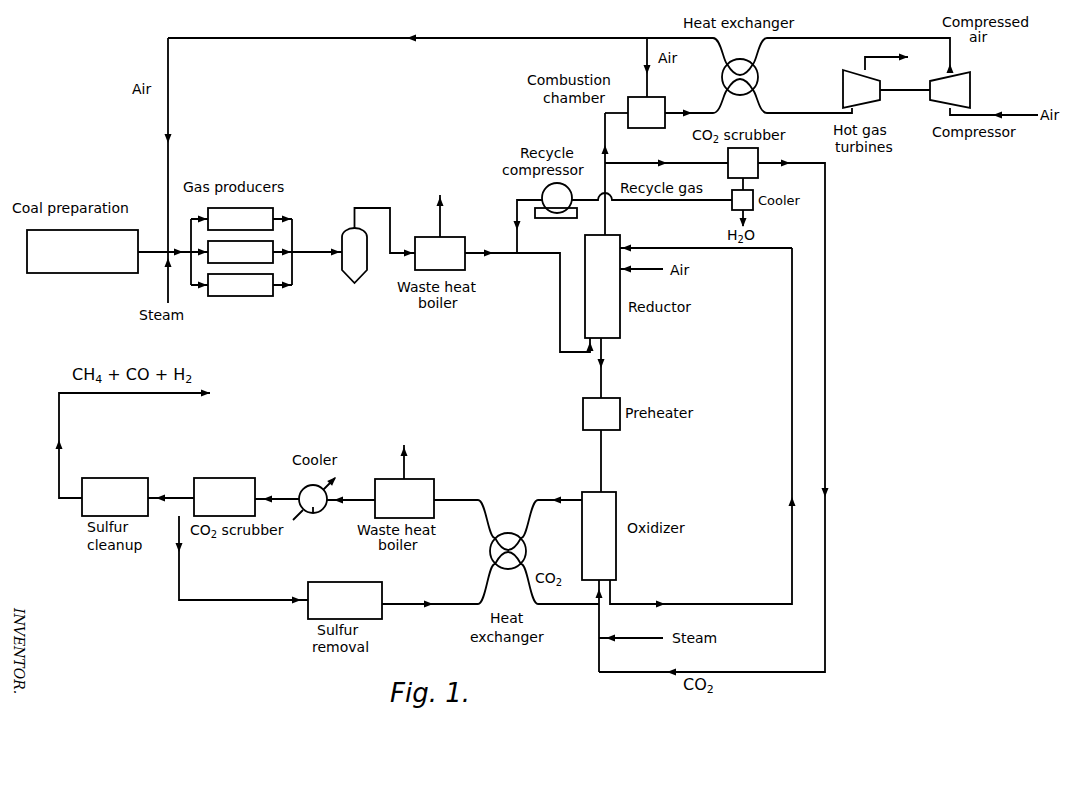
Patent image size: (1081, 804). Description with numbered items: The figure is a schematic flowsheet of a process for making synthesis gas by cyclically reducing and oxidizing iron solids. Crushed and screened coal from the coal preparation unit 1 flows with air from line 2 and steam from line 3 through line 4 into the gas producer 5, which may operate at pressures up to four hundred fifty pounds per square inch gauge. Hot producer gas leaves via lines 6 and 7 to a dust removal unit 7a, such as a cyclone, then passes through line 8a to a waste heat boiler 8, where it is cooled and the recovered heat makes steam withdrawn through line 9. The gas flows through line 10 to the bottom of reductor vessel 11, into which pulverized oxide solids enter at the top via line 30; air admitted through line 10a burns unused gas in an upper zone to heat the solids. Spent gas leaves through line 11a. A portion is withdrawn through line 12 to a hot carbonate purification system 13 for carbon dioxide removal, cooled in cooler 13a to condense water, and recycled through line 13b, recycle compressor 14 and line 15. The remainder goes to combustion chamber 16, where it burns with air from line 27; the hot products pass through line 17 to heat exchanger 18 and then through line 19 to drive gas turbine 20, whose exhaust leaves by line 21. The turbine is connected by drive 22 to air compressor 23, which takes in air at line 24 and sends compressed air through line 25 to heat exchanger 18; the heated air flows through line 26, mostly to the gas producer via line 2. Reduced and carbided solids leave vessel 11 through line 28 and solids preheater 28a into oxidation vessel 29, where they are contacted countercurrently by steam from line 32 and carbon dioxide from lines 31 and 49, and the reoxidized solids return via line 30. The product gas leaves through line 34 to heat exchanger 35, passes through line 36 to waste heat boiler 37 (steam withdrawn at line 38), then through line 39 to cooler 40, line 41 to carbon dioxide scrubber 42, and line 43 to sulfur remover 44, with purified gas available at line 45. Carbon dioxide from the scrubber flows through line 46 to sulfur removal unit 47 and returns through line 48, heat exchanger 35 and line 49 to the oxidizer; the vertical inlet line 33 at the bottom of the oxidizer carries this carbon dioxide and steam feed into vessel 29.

The coal preparation unit 1 is at (69, 276).
The air line 2 is at (166, 185).
The steam line 3 is at (166, 303).
The producer feed line 4 is at (173, 244).
The gas producer 5 is at (240, 252).
The producer gas outlet line 6 is at (282, 244).
The producer gas line 7 is at (328, 254).
The dust removal unit 7a is at (343, 268).
The waste heat boiler 8 is at (452, 268).
The gas line to waste heat boiler 8a is at (410, 218).
The steam withdrawal line 9 is at (440, 207).
The gas line to reductor 10 is at (559, 344).
The air inlet line 10a is at (663, 267).
The reductor vessel 11 is at (619, 294).
The spent gas line 11a is at (605, 222).
The spent gas withdrawal line 12 is at (634, 164).
The hot carbonate purification system 13 is at (757, 173).
The cooler 13a is at (754, 208).
The recycle gas line 13b is at (690, 203).
The recycle compressor 14 is at (562, 215).
The recycle discharge line 15 is at (516, 236).
The combustion chamber 16 is at (661, 131).
The combustion products line 17 is at (708, 112).
The heat exchanger 18 is at (751, 60).
The turbine inlet line 19 is at (798, 114).
The gas turbine 20 is at (860, 106).
The turbine exhaust line 21 is at (896, 58).
The drive 22 is at (892, 91).
The air compressor 23 is at (953, 106).
The air intake line 24 is at (1014, 114).
The compressed air line 25 is at (853, 38).
The heated air line 26 is at (668, 37).
The combustion air line 27 is at (650, 83).
The solids transfer line 28 is at (601, 383).
The solids preheater 28a is at (583, 414).
The oxidation vessel 29 is at (615, 536).
The solids return line 30 is at (790, 411).
The carbon dioxide feed line 31 is at (830, 414).
The steam feed line 32 is at (647, 636).
The oxidizer bottom inlet line 33 is at (598, 593).
The oxidizer product gas line 34 is at (577, 497).
The heat exchanger 35 is at (489, 555).
The gas line to waste heat boiler 36 is at (478, 497).
The waste heat boiler 37 is at (424, 483).
The steam withdrawal line 38 is at (403, 452).
The gas line to cooler 39 is at (366, 496).
The cooler 40 is at (315, 497).
The gas line to carbon dioxide scrubber 41 is at (292, 495).
The carbon dioxide scrubber 42 is at (239, 511).
The gas line to sulfur remover 43 is at (188, 495).
The sulfur remover 44 is at (128, 512).
The purified gas line 45 is at (57, 465).
The carbon dioxide line 46 is at (212, 601).
The sulfur compound removal unit 47 is at (357, 615).
The carbon dioxide return line 48 is at (459, 605).
The heated carbon dioxide line 49 is at (584, 606).